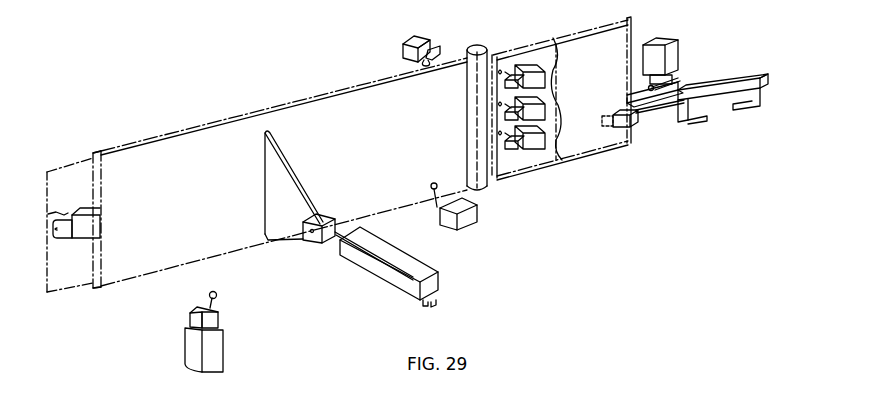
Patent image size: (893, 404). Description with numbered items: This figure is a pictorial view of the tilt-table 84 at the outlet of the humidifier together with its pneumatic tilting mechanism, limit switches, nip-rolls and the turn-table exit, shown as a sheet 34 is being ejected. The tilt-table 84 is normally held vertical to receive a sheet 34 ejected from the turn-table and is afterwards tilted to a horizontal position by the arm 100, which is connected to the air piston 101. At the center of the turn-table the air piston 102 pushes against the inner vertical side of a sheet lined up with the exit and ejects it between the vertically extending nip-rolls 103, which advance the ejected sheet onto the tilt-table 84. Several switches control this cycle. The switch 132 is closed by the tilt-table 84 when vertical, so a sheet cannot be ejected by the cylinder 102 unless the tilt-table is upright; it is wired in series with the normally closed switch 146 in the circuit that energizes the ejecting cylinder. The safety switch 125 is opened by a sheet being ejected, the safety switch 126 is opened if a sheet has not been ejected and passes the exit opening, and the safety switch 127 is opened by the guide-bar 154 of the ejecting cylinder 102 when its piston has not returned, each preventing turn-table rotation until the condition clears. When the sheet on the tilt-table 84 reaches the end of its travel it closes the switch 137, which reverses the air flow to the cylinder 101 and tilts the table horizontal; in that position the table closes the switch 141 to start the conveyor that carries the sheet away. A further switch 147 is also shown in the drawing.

The sheet 34 is at (77, 163).
The tilt-table 84 is at (180, 268).
The arm 100 is at (297, 178).
The air piston 101 is at (400, 250).
The air piston 102 is at (707, 88).
The nip-rolls 103 is at (472, 41).
The safety switch 125 is at (407, 43).
The safety switch 126 is at (532, 70).
The safety switch 127 is at (678, 45).
The switch 132 is at (478, 222).
The switch 137 is at (97, 217).
The switch 141 is at (222, 343).
The switch 146 is at (546, 108).
The module 147 is at (546, 137).
The guide-bar 154 is at (649, 86).